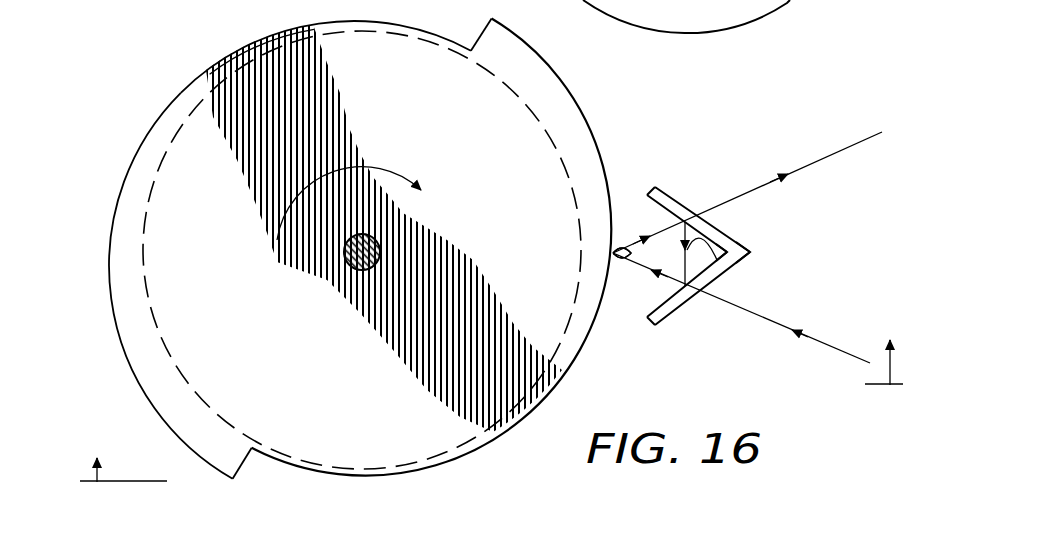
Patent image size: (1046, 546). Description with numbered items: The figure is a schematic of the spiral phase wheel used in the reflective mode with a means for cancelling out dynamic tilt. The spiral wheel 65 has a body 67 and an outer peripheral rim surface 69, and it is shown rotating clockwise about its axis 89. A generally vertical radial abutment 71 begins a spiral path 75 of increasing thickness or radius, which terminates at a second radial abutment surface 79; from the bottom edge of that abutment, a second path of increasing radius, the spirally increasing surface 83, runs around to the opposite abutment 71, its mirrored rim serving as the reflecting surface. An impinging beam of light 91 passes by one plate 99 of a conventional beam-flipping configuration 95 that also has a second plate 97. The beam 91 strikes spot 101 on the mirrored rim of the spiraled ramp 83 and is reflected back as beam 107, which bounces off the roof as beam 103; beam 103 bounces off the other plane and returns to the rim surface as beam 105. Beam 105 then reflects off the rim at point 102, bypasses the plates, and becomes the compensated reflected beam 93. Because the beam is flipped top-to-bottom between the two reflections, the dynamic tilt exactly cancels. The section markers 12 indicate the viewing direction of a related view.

The section view indicator 12 is at (902, 416).
The spiral wheel 65 is at (611, 129).
The body 67 is at (309, 52).
The outer peripheral rim surface 69 is at (218, 52).
The radial abutment 71 is at (478, 42).
The spiral path 75 is at (126, 178).
The second radial abutment surface 79 is at (243, 465).
The spirally increasing surface 83 is at (606, 157).
The axis 89 is at (380, 257).
The impinging beam of light 91 is at (836, 348).
The compensated reflected beam 93 is at (834, 156).
The beam-flipping configuration 95 is at (689, 193).
The second plate 97 is at (743, 245).
The plate 99 is at (685, 303).
The spot 101 is at (612, 258).
The point 102 is at (622, 253).
The beam 103 is at (719, 276).
The beam 105 is at (663, 274).
The beam 107 is at (627, 240).